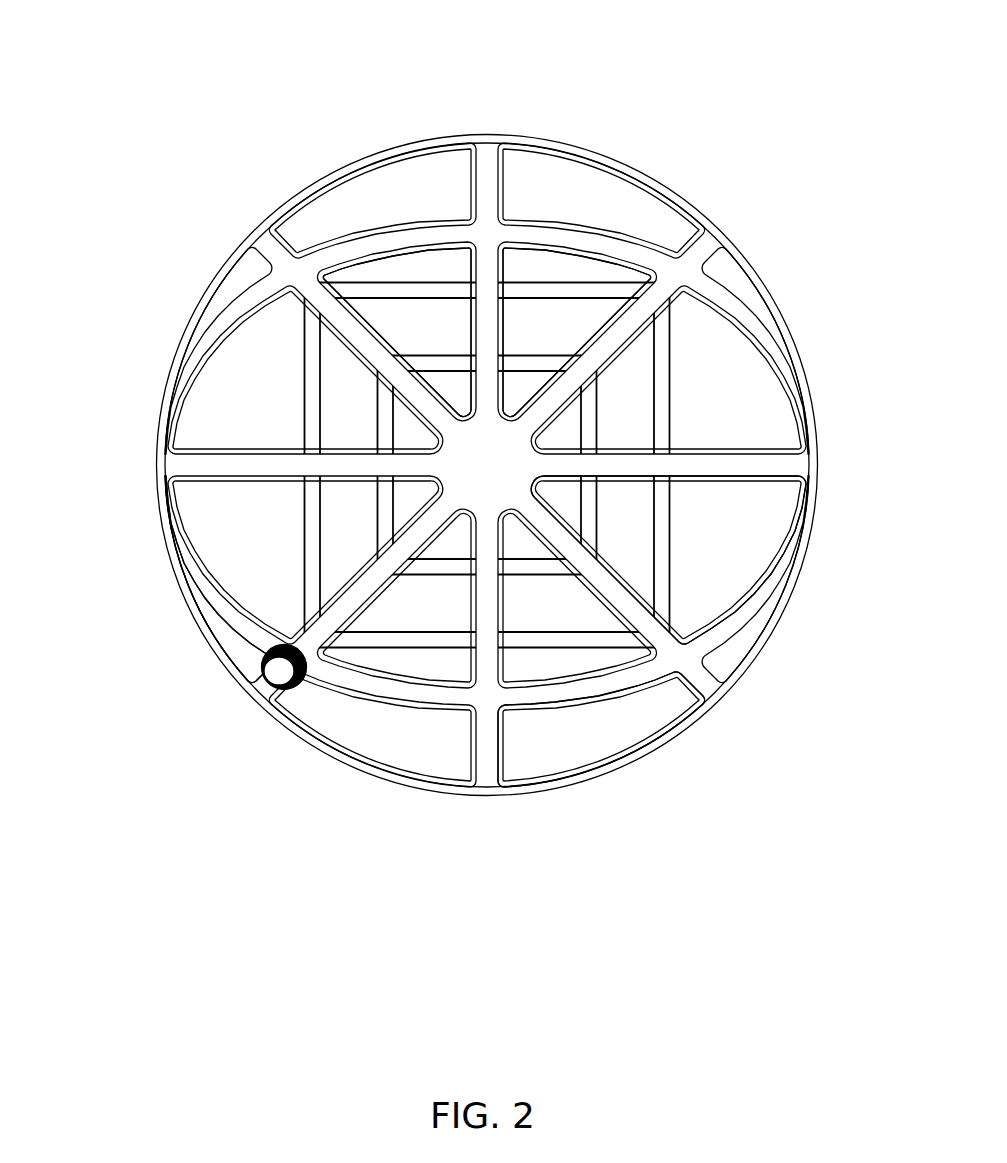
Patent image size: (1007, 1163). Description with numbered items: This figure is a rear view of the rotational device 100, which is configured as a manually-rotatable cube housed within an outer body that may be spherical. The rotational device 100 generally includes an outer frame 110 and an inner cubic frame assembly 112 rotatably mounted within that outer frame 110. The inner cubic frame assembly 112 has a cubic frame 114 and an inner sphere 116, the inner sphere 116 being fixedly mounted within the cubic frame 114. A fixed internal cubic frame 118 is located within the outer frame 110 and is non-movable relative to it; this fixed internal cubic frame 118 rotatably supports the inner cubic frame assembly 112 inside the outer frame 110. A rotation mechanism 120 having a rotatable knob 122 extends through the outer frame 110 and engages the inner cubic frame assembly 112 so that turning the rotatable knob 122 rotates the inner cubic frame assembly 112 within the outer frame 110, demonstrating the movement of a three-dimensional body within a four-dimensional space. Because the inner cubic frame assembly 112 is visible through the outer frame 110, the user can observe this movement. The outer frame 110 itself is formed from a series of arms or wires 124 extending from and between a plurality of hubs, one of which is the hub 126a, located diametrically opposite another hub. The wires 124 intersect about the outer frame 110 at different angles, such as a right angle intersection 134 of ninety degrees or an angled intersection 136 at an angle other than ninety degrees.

The rotational device 100 is at (484, 454).
The outer frame 110 is at (546, 128).
The inner cubic frame assembly 112 is at (540, 350).
The cubic frame 114 is at (587, 423).
The inner sphere 116 is at (548, 490).
The fixed internal cubic frame 118 is at (312, 412).
The rotation mechanism 120 is at (155, 718).
The rotatable knob 122 is at (278, 670).
The wires 124 is at (487, 468).
The hub 126a is at (477, 490).
The right angle intersection 134 is at (483, 697).
The angled intersection 136 is at (678, 275).